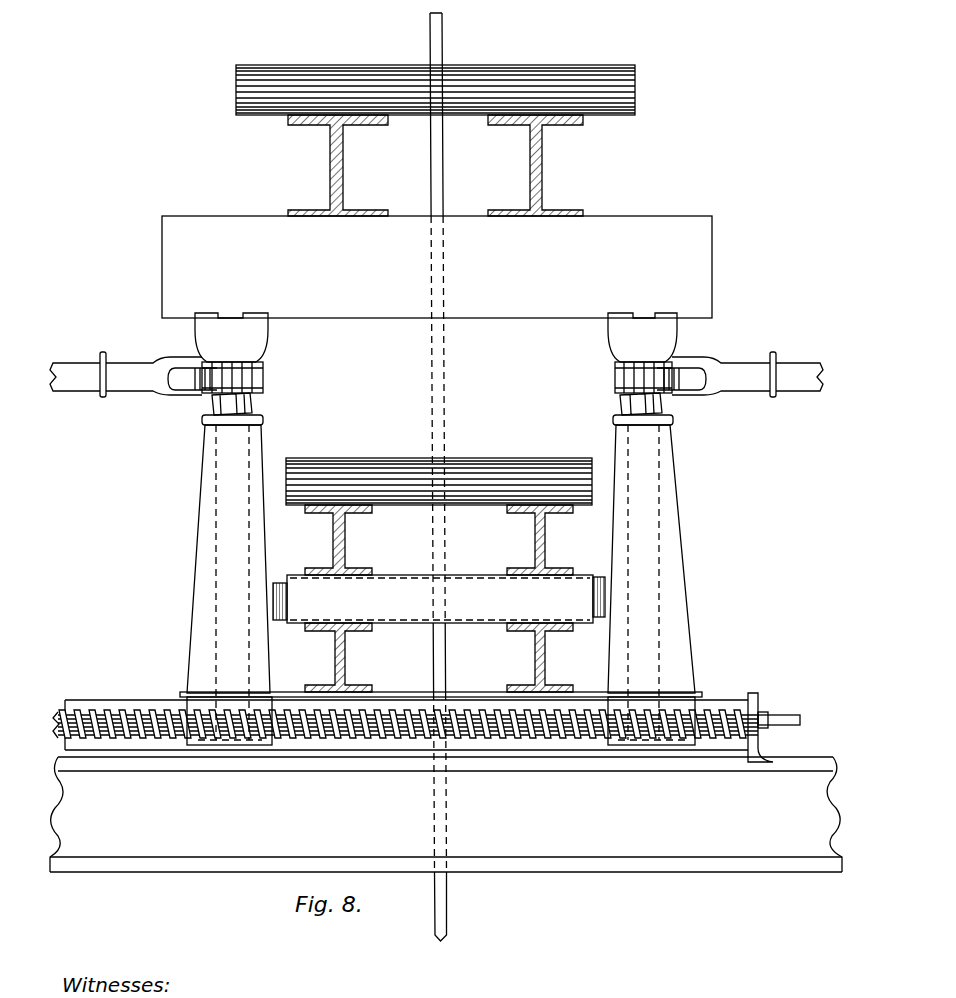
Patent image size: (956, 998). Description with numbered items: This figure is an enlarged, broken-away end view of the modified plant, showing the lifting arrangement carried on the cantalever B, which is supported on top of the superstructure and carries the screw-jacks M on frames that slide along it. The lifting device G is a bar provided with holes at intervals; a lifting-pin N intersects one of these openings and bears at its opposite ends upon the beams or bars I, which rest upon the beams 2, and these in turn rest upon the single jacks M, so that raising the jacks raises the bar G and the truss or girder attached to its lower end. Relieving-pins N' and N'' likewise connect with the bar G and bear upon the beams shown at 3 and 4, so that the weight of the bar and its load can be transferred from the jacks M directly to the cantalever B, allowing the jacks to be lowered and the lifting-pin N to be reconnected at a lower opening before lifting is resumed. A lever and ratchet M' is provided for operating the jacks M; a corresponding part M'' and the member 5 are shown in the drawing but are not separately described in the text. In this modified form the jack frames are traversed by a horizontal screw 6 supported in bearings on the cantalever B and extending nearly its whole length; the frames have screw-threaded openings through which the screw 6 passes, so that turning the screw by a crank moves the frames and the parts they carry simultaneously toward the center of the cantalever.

The lifting device G is at (440, 45).
The lifting-pin N is at (454, 90).
The beams or bars I is at (341, 176).
The beams 2 is at (437, 289).
The lever and ratchet M' is at (156, 383).
The right arm M'' is at (719, 383).
The screw-jacks M is at (452, 580).
The relieving-pin N' is at (439, 466).
The beam 3 is at (345, 547).
The beam 4 is at (440, 599).
The relieving-pin N'' is at (441, 582).
The I-beams 5 is at (346, 657).
The screws 6 is at (382, 735).
The cantalever B is at (752, 705).